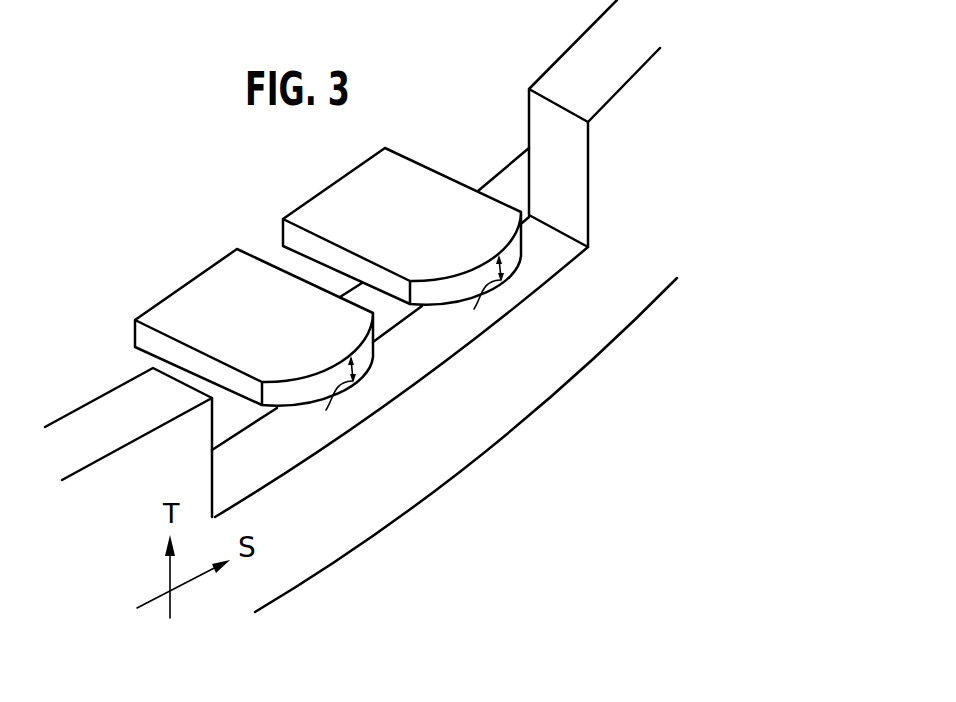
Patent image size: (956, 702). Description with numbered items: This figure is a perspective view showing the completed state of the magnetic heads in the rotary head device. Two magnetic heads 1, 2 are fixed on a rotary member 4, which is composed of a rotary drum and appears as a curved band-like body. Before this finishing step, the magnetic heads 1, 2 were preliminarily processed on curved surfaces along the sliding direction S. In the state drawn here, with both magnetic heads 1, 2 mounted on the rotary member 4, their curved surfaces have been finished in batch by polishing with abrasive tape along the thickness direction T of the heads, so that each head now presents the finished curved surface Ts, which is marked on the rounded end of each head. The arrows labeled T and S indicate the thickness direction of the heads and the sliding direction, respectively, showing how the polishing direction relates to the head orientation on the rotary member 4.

The magnetic head 1 is at (353, 383).
The magnetic head 2 is at (501, 283).
The rotary member 4 is at (548, 403).